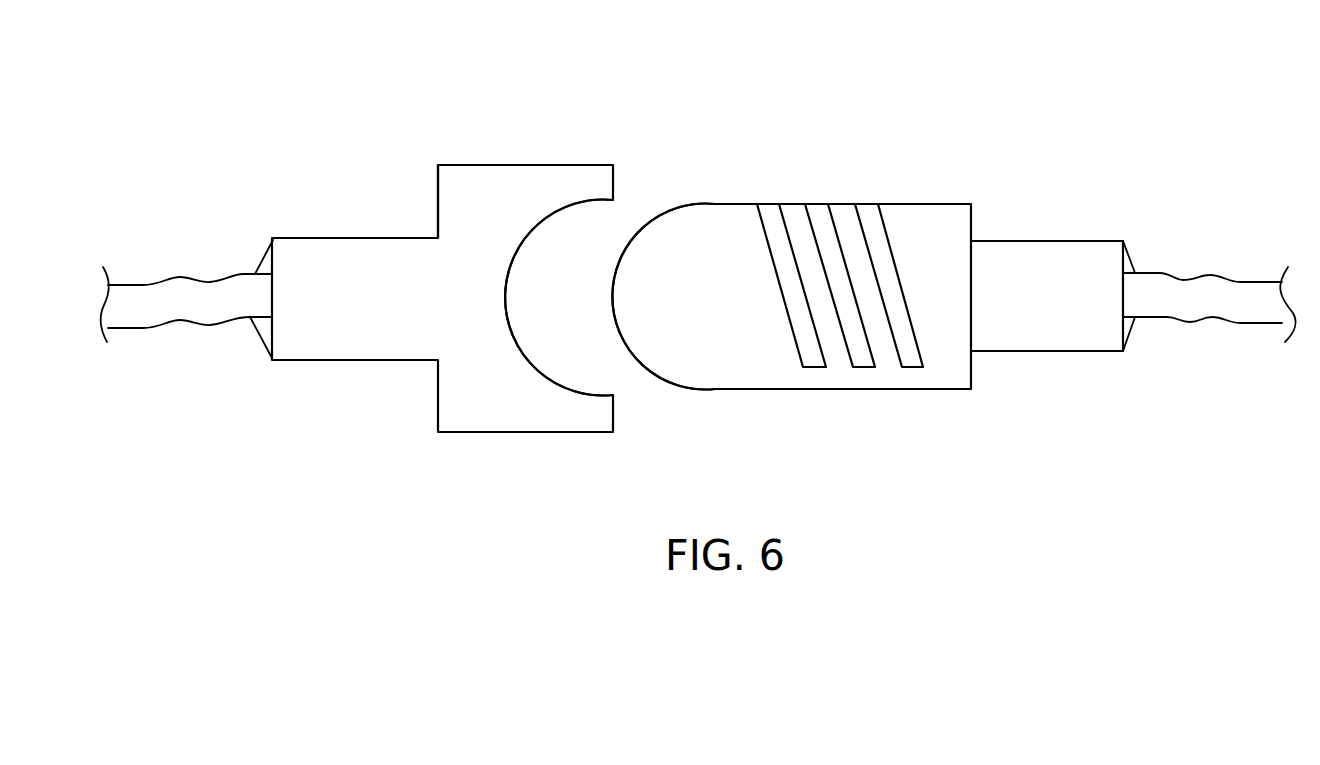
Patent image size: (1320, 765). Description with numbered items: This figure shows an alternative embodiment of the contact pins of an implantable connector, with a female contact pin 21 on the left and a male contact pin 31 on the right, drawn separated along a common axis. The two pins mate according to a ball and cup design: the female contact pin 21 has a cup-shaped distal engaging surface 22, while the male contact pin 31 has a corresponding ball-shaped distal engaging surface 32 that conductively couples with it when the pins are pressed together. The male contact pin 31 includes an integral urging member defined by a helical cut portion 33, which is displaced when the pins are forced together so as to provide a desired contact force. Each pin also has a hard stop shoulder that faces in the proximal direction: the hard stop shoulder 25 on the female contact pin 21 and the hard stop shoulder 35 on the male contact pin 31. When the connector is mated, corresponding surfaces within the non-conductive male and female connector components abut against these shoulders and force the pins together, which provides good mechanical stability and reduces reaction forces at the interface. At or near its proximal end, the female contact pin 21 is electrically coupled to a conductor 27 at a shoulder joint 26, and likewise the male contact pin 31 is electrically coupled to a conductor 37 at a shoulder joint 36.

The female contact pin 21 is at (482, 190).
The distal engaging surface 22 is at (579, 207).
The hard stop shoulder 25 is at (438, 197).
The shoulder joint 26 is at (265, 250).
The conductor 27 is at (206, 293).
The male contact pin 31 is at (932, 223).
The distal engaging surface 32 is at (670, 220).
The helical cut portion 33 is at (813, 213).
The hard stop shoulder 35 is at (973, 220).
The shoulder joint 36 is at (1132, 267).
The conductor 37 is at (1193, 298).